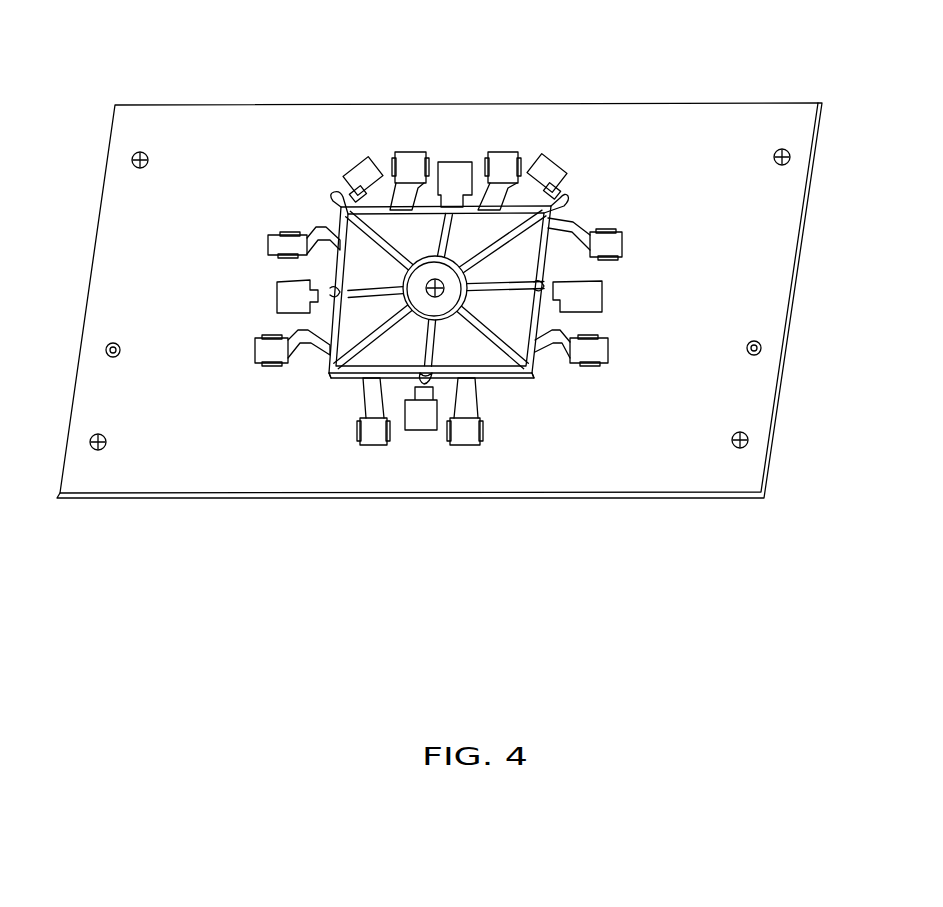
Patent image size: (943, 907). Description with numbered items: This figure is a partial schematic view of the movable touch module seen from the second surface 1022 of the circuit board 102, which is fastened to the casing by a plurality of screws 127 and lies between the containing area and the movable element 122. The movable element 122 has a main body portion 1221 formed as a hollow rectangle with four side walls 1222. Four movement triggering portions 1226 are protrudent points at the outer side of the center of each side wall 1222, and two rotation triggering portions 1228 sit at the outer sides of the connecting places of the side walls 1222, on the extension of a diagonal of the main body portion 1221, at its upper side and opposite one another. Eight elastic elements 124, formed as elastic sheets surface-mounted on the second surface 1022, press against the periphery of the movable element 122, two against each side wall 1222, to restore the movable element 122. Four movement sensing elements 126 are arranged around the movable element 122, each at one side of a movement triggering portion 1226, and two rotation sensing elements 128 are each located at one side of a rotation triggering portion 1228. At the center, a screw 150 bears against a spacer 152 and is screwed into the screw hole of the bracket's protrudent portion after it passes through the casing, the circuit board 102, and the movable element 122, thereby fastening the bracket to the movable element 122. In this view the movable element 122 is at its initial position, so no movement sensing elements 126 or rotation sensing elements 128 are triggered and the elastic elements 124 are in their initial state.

The circuit board 102 is at (246, 98).
The second surface 1022 is at (182, 133).
The screws 127 is at (131, 160).
The movable element 122 is at (300, 392).
The main body portion 1221 is at (540, 354).
The side walls 1222 is at (498, 368).
The movement triggering portions 1226 is at (328, 287).
The rotation triggering portions 1228 is at (331, 198).
The elastic elements 124 is at (275, 245).
The movement sensing elements 126 is at (285, 296).
The rotation sensing elements 128 is at (358, 152).
The screw 150 is at (441, 300).
The spacer 152 is at (412, 300).